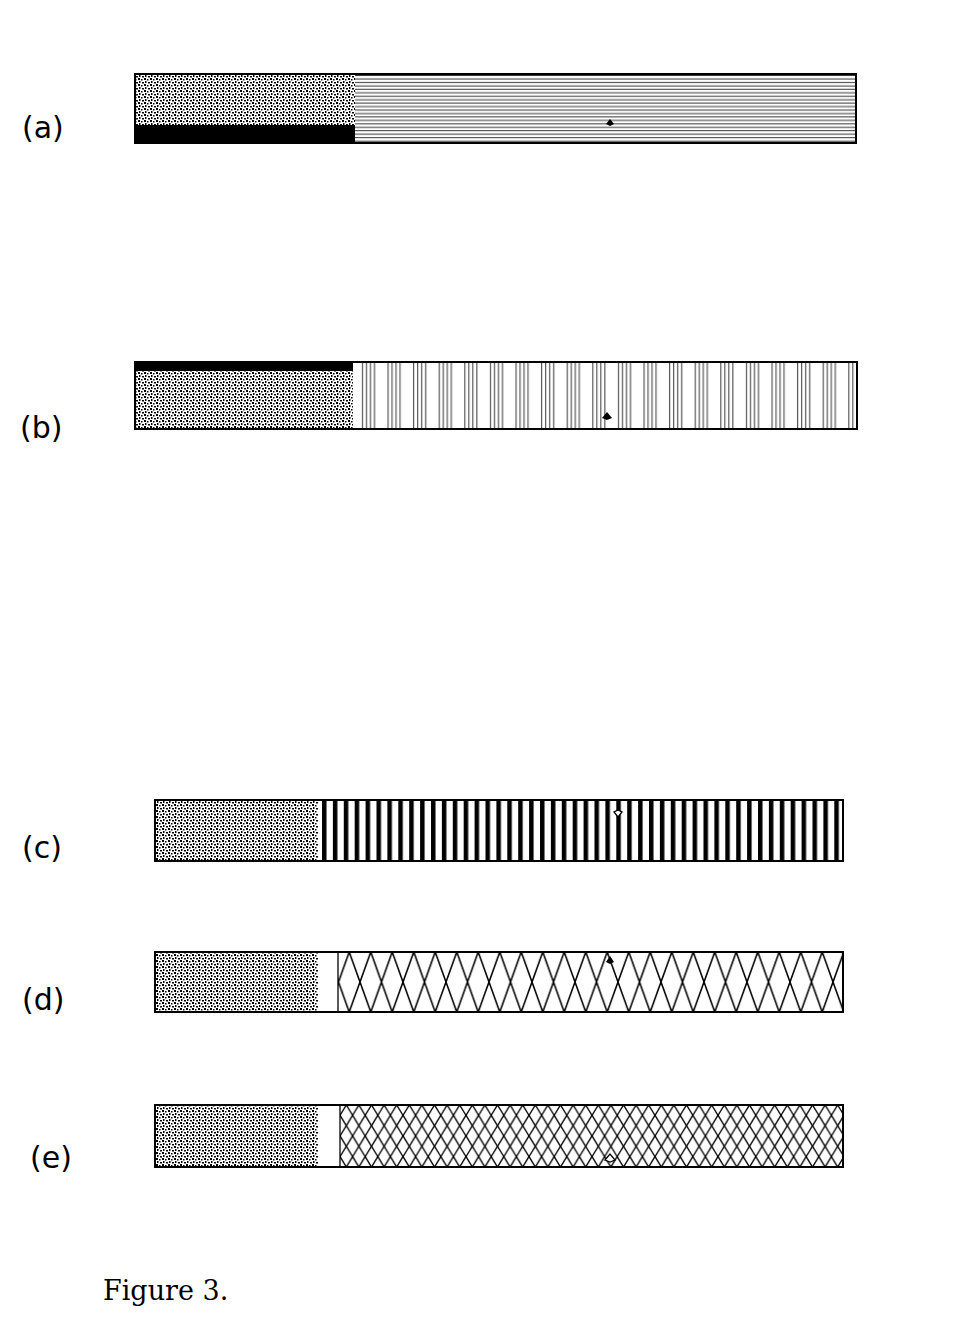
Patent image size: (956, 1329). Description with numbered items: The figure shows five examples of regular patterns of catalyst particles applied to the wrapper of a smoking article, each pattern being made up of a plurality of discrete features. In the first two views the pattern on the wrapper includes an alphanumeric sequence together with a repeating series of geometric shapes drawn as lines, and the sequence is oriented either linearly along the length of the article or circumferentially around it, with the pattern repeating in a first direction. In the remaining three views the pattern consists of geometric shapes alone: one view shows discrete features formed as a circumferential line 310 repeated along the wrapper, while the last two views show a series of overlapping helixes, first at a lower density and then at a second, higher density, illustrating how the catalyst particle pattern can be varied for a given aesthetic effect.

The circumferential line 310 is at (725, 818).